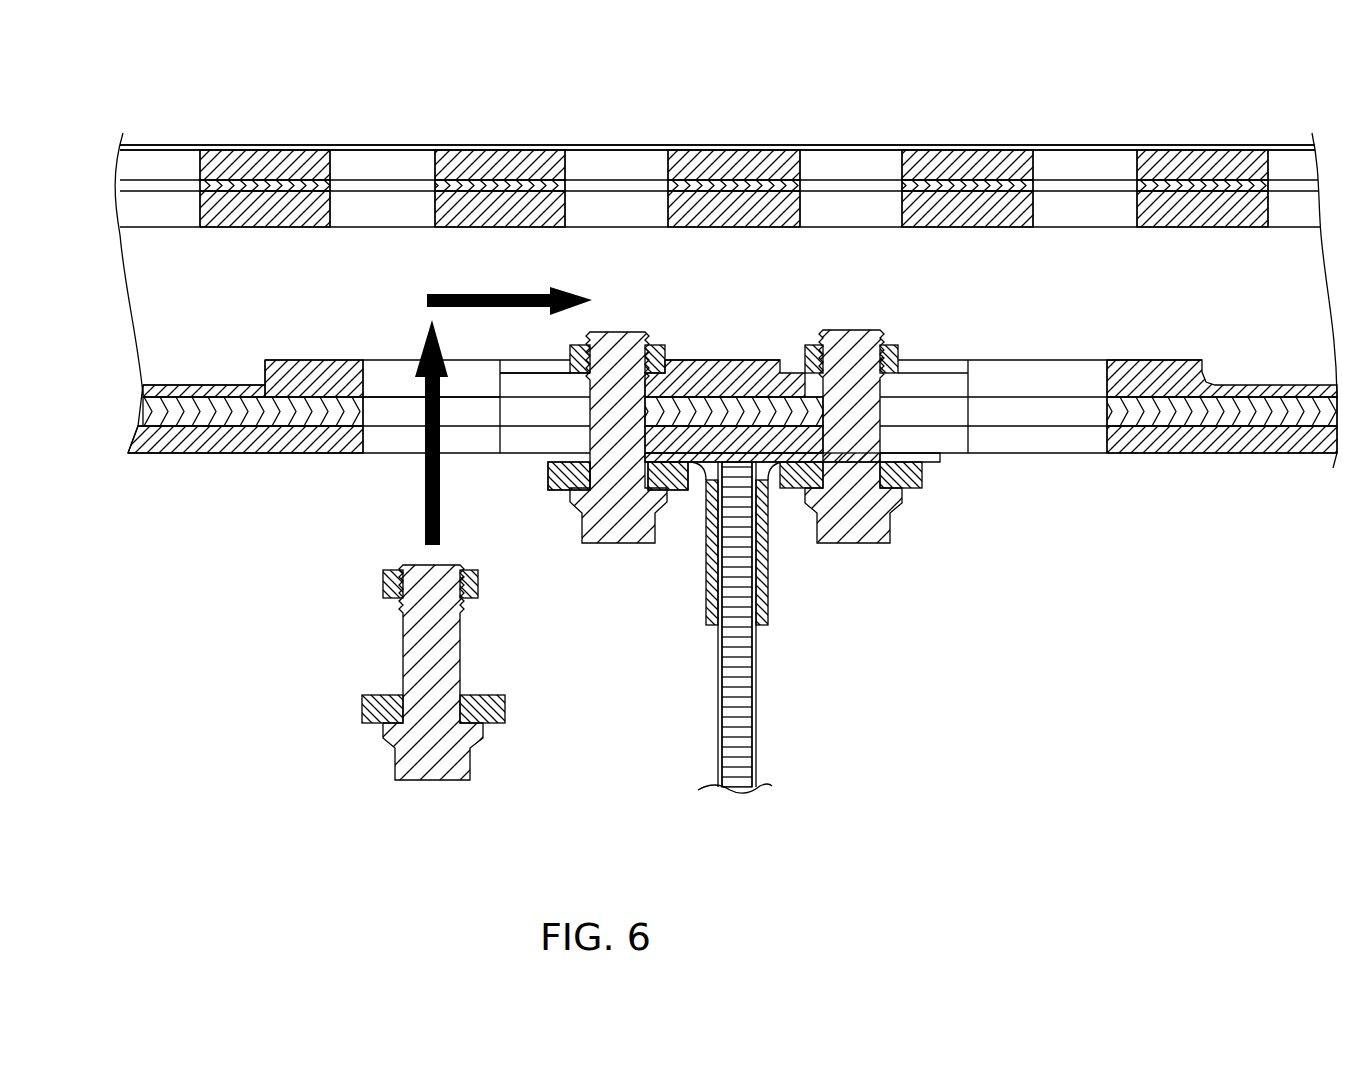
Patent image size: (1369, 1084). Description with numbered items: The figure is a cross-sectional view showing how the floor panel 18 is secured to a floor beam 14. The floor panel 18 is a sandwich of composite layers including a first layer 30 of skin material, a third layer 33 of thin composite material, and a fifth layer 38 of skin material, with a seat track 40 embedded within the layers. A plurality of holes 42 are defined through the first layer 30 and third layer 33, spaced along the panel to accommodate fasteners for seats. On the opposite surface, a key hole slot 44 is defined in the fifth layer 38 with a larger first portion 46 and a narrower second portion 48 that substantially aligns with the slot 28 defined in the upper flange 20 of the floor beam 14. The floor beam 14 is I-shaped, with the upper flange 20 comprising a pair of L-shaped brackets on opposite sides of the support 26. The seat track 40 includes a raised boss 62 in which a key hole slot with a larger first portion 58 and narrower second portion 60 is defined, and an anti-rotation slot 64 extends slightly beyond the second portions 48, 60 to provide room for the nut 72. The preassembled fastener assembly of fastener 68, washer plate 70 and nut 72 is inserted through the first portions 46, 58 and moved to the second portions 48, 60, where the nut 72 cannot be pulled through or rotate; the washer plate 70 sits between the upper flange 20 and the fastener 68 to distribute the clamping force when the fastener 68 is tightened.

The floor beam 14 is at (762, 738).
The floor panel 18 is at (1285, 145).
The upper flange 20 is at (776, 607).
The support 26 is at (745, 678).
The slot 28 is at (935, 458).
The first layer 30 is at (418, 148).
The third layer 33 is at (247, 186).
The fifth layer 38 is at (250, 448).
The seat track 40 is at (222, 208).
The holes 42 is at (1060, 160).
The key hole slot 44 is at (398, 406).
The first portion 46 is at (478, 436).
The second portion 48 is at (546, 432).
The first portion 58 is at (392, 366).
The second portion 60 is at (543, 388).
The raised boss 62 is at (313, 378).
The anti-rotation slot 64 is at (527, 367).
The fastener 68 is at (418, 782).
The washer plate 70 is at (362, 720).
The nut 72 is at (383, 585).